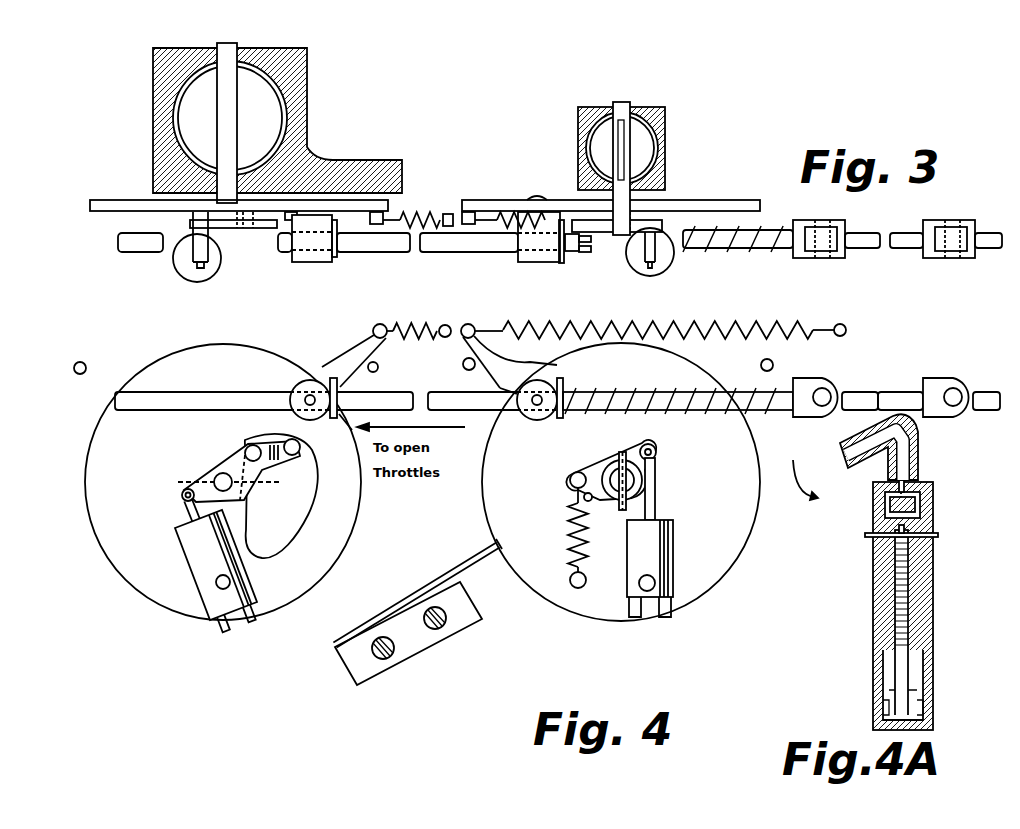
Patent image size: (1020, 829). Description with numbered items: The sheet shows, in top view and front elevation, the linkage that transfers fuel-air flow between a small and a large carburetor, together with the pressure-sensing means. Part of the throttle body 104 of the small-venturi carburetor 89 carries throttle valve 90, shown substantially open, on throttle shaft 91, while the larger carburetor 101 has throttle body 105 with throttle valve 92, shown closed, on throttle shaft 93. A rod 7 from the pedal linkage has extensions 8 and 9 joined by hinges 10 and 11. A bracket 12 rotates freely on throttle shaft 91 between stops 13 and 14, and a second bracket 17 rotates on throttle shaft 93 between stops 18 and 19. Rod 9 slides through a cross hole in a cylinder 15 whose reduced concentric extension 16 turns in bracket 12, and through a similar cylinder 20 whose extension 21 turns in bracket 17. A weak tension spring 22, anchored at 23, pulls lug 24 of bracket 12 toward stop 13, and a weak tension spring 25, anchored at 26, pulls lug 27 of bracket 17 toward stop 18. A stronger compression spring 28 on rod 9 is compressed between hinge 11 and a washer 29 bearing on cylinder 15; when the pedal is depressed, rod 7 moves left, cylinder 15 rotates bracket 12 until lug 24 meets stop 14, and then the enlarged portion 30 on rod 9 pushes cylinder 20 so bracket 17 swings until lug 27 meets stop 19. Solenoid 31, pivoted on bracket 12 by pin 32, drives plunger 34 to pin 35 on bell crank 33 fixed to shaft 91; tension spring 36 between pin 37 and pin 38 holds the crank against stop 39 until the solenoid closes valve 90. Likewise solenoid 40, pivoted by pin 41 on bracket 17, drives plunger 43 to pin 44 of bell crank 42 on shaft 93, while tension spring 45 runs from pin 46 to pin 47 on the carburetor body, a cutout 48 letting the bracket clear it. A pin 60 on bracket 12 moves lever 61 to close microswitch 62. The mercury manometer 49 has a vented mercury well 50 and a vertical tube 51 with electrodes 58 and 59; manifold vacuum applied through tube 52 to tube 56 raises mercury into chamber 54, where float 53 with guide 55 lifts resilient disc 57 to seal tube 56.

In FIG. 3, the rod 7 is at (992, 250).
In FIG. 4, the rod 7 is at (985, 390).
In FIG. 3, the extension 8 is at (902, 250).
In FIG. 4, the extension 8 is at (890, 390).
In FIG. 3, the extension rod 9 is at (485, 250).
In FIG. 4, the extension rod 9 is at (436, 392).
In FIG. 3, the hinge 10 is at (943, 264).
In FIG. 4, the hinge 10 is at (946, 380).
In FIG. 3, the hinge joint 11 is at (810, 266).
In FIG. 4, the hinge joint 11 is at (834, 380).
In FIG. 3, the bracket 12 is at (735, 200).
In FIG. 4, the bracket 12 is at (764, 512).
In FIG. 4, the stop 13 is at (773, 364).
In FIG. 4, the stop 14 is at (463, 365).
In FIG. 3, the cylinder 15 is at (530, 262).
In FIG. 4, the cylinder 15 is at (530, 384).
In FIG. 3, the concentric extension 16 is at (535, 197).
In FIG. 4, the concentric extension 16 is at (532, 418).
In FIG. 3, the second bracket 17 is at (90, 205).
In FIG. 4, the second bracket 17 is at (356, 521).
In FIG. 4, the stop 18 is at (378, 367).
In FIG. 4, the stop 19 is at (85, 363).
In FIG. 3, the cylinder 20 is at (310, 262).
In FIG. 4, the cylinder 20 is at (310, 380).
In FIG. 3, the concentric extension 21 is at (318, 196).
In FIG. 4, the tension coil spring 22 is at (686, 325).
In FIG. 4, the attachment point 23 is at (846, 325).
In FIG. 4, the lug 24 is at (481, 326).
In FIG. 4, the tension coil spring 25 is at (446, 325).
In FIG. 4, the attachment point 26 is at (468, 324).
In FIG. 4, the lug 27 is at (374, 326).
In FIG. 4, the compression coil spring 28 is at (633, 390).
In FIG. 3, the washer 29 is at (562, 263).
In FIG. 4, the washer 29 is at (565, 386).
In FIG. 4, the enlarged portion 30 is at (337, 380).
In FIG. 4, the solenoid 31 is at (674, 555).
In FIG. 4, the pin 32 is at (645, 576).
In FIG. 4, the bell crank 33 is at (640, 456).
In FIG. 4, the plunger 34 is at (656, 505).
In FIG. 4, the pin 35 is at (656, 453).
In FIG. 4, the tension spring 36 is at (566, 527).
In FIG. 4, the pin 37 is at (571, 477).
In FIG. 4, the pin 38 is at (570, 578).
In FIG. 4, the stop 39 is at (591, 501).
In FIG. 4, the solenoid 40 is at (180, 557).
In FIG. 4, the pin 41 is at (232, 581).
In FIG. 4, the bell crank 42 is at (216, 470).
In FIG. 4, the plunger 43 is at (186, 511).
In FIG. 4, the pin 44 is at (181, 494).
In FIG. 4, the tension spring 45 is at (280, 460).
In FIG. 4, the pin 46 is at (245, 452).
In FIG. 4, the pin 47 is at (300, 447).
In FIG. 4, the cutout 48 is at (314, 491).
In FIG. 4A, the mercury manometer 49 is at (934, 602).
In FIG. 4A, the mercury well 50 is at (925, 696).
In FIG. 4A, the vertical tube 51 is at (910, 574).
In FIG. 4A, the tube 52 is at (843, 465).
In FIG. 4A, the float 53 is at (920, 518).
In FIG. 4A, the chamber 54 is at (921, 503).
In FIG. 4A, the guide 55 is at (906, 484).
In FIG. 4A, the tube 56 is at (918, 460).
In FIG. 4A, the resilient disc 57 is at (886, 504).
In FIG. 4A, the electrode 58 is at (938, 538).
In FIG. 4A, the electrode 59 is at (865, 537).
In FIG. 4, the pin 60 is at (496, 544).
In FIG. 4, the lever 61 is at (462, 573).
In FIG. 4, the microswitch 62 is at (480, 608).
In FIG. 3, the carburetor 89 is at (665, 175).
In FIG. 3, the throttle valve 90 is at (626, 158).
In FIG. 3, the throttle shaft 91 is at (625, 102).
In FIG. 3, the throttle valve 92 is at (250, 128).
In FIG. 3, the throttle shaft 93 is at (237, 46).
In FIG. 3, the carburetor 101 is at (153, 150).
In FIG. 3, the throttle body 104 is at (652, 134).
In FIG. 3, the throttle body 105 is at (288, 100).